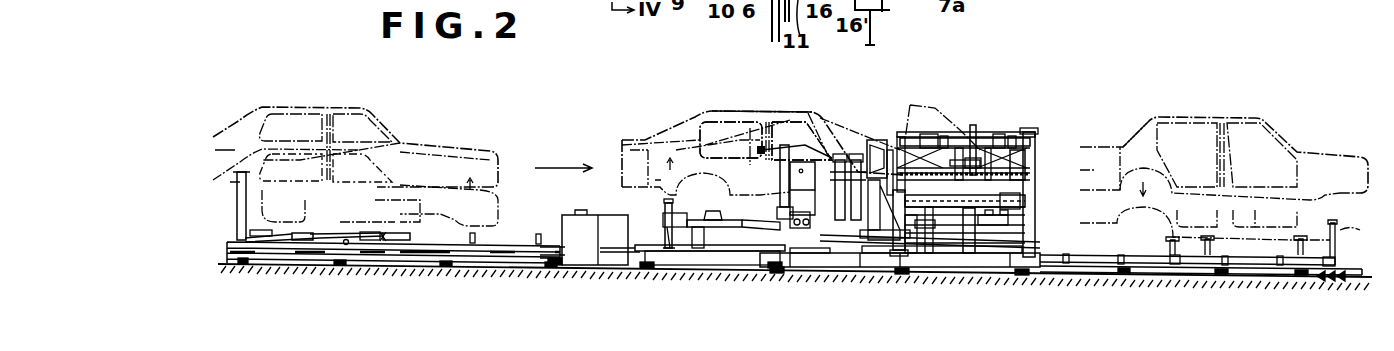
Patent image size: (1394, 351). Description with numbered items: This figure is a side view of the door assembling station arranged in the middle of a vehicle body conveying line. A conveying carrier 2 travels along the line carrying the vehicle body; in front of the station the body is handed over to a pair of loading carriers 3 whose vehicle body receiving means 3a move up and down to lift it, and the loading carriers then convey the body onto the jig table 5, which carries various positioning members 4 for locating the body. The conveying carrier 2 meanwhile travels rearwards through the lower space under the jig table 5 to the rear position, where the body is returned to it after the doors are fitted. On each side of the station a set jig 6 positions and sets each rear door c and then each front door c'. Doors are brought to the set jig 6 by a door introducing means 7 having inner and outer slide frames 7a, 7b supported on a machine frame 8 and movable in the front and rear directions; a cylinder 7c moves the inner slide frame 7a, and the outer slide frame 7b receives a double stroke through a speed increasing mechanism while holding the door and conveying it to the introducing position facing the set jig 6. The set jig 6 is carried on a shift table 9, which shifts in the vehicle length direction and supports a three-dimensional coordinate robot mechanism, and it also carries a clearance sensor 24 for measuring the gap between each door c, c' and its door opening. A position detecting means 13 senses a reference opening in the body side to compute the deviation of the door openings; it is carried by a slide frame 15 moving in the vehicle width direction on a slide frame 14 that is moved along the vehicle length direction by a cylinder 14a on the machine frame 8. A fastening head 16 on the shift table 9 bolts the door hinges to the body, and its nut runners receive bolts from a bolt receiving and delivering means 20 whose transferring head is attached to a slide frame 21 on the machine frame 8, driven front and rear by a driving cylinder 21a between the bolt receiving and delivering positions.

The conveying carrier 2 is at (1262, 235).
The loading carrier 3 is at (372, 238).
The vehicle body receiving means 3a is at (390, 240).
The positioning member 4 is at (660, 200).
The jig table 5 is at (712, 222).
The set jig 6 is at (808, 165).
The door introducing means 7 is at (985, 135).
The inner side slide frame 7a is at (872, 140).
The outer side slide frame 7b is at (1040, 155).
The cylinder 7c is at (1028, 132).
The machine frame 8 is at (1060, 168).
The shift table 9 is at (770, 262).
The position detecting means 13 is at (860, 210).
The slide frame 14 is at (985, 235).
The cylinder 14a is at (1010, 222).
The slide frame 15 is at (898, 230).
The fastening head 16 is at (858, 158).
The bolt receiving and delivering means 20 is at (925, 205).
The slide frame 21 is at (990, 120).
The driving cylinder 21a is at (1015, 200).
The clearance sensor 24 is at (795, 155).
The rear door c is at (801, 116).
The front door c' is at (944, 108).